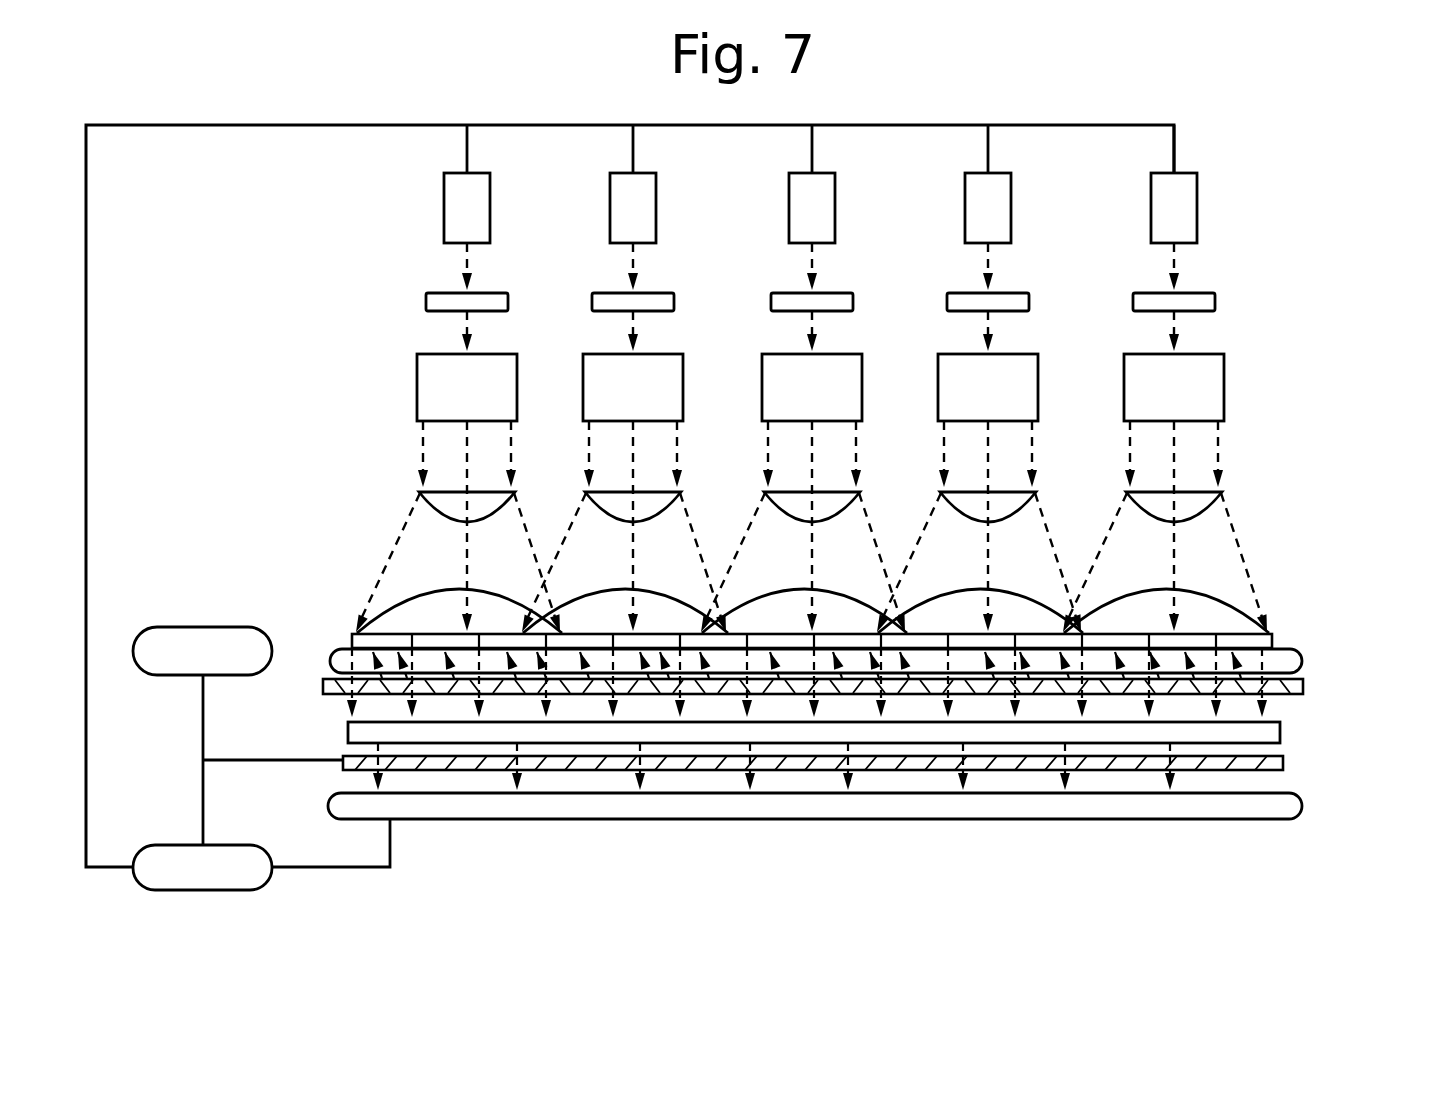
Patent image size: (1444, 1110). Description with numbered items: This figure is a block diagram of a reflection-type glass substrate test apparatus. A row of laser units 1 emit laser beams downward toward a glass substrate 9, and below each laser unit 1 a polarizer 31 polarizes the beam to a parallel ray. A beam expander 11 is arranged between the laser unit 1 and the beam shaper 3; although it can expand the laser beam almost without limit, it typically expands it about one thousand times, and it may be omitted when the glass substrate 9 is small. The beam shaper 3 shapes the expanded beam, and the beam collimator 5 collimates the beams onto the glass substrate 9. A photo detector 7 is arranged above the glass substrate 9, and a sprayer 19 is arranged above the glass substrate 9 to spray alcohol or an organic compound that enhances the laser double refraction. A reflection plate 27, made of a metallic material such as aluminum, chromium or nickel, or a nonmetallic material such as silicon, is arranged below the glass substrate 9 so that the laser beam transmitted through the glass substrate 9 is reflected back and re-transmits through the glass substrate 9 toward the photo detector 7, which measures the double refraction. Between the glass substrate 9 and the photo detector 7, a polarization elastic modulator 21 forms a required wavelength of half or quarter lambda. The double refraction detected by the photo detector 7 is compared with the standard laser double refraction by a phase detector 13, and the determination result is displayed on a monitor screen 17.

The laser unit 1 is at (1215, 216).
The polarizer 31 is at (1232, 300).
The beam expander 11 is at (1250, 413).
The beam shaper 3 is at (1250, 517).
The beam collimator 5 is at (1287, 613).
The photo detector 7 is at (1302, 657).
The sprayer 19 is at (1303, 688).
The glass substrate 9 is at (1280, 735).
The polarization elastic modulator 21 is at (1283, 765).
The reflection plate 27 is at (1312, 815).
The monitor screen 17 is at (213, 627).
The phase detector 13 is at (173, 845).